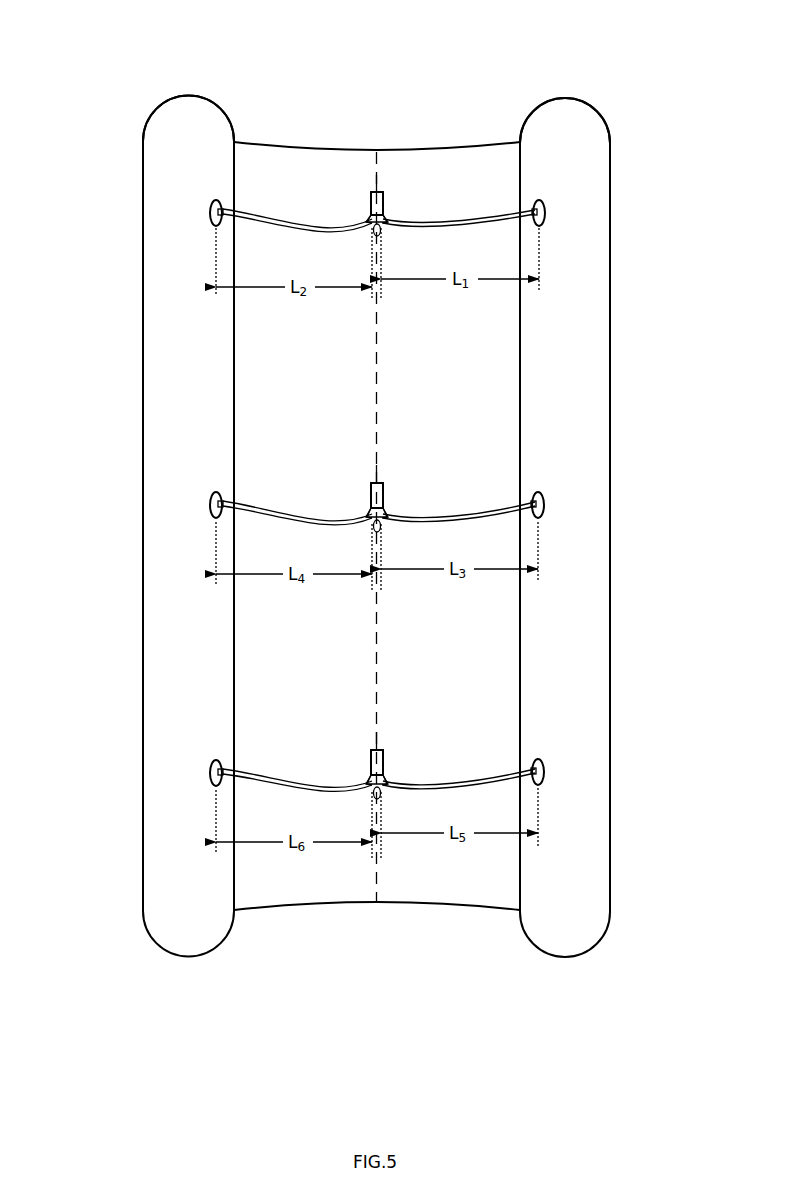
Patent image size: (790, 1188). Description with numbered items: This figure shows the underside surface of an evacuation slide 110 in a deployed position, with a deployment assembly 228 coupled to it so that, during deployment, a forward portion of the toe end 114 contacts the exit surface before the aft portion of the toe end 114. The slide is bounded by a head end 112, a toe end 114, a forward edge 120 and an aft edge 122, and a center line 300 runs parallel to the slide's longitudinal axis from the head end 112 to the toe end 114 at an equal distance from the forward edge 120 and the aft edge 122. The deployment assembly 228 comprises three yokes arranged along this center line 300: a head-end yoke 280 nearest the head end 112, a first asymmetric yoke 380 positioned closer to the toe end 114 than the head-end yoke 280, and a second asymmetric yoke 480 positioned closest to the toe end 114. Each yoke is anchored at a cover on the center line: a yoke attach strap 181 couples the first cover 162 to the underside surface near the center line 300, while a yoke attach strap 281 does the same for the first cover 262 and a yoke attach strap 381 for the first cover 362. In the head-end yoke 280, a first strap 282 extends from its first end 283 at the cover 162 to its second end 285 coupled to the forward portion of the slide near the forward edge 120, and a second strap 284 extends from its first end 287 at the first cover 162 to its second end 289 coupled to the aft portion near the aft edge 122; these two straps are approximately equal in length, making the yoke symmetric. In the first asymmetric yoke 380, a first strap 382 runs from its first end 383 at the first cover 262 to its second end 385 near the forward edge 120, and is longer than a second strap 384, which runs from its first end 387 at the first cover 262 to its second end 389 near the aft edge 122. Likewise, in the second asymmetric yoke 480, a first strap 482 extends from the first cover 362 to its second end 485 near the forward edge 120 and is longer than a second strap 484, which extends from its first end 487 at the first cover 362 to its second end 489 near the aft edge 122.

The deployment assembly 228 is at (114, 118).
The evacuation slide 110 is at (553, 130).
The head end 112 is at (270, 143).
The toe end 114 is at (463, 910).
The forward edge 120 is at (610, 452).
The aft edge 122 is at (143, 452).
The center line 300 is at (366, 158).
The first cover 162 is at (392, 152).
The first cover 262 is at (384, 480).
The first cover 362 is at (386, 746).
The head-end yoke 280 is at (390, 212).
The first asymmetric yoke 380 is at (392, 506).
The second asymmetric yoke 480 is at (392, 772).
The second strap 284 is at (298, 226).
The second strap 384 is at (282, 517).
The second strap 484 is at (296, 783).
The first strap 282 is at (485, 221).
The first strap 382 is at (480, 512).
The first strap 482 is at (484, 778).
The second end of second strap 289 is at (217, 203).
The second end of second strap 389 is at (217, 495).
The second end of second strap 489 is at (217, 763).
The second end of first strap 285 is at (538, 201).
The second end of first strap 385 is at (537, 493).
The second end of first strap 485 is at (538, 760).
The first end of second strap 287 is at (374, 221).
The first end of second strap 387 is at (370, 516).
The first end of second strap 487 is at (370, 783).
The first end of first strap 283 is at (390, 225).
The first end of first strap 383 is at (384, 521).
The yoke attach strap 181 is at (372, 230).
The yoke attach strap 281 is at (372, 526).
The yoke attach strap 381 is at (372, 793).